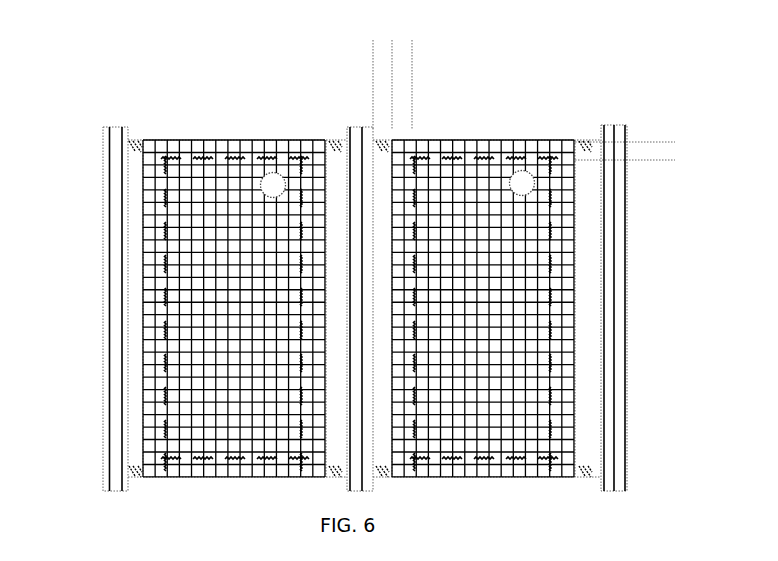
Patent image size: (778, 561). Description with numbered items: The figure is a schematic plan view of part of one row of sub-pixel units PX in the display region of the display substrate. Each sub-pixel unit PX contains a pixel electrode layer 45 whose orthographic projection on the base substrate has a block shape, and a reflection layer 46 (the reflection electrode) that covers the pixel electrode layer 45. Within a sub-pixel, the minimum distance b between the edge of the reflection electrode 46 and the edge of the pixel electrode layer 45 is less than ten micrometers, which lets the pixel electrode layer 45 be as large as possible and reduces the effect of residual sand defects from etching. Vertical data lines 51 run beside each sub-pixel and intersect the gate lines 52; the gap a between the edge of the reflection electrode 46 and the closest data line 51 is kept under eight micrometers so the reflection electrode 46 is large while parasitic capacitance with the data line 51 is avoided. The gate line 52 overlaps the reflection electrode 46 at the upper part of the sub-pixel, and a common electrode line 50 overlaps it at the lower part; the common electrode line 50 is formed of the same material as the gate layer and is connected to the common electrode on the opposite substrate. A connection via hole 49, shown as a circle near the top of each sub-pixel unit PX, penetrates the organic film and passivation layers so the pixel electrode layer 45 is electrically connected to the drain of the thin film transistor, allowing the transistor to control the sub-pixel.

The pixel electrode layer 45 is at (143, 243).
The reflection layer 46 is at (195, 148).
The connection via hole 49 is at (273, 190).
The common electrode line 50 is at (132, 476).
The data line 51 is at (103, 178).
The gate line 52 is at (137, 146).
The sub-pixel unit PX is at (235, 110).
The gap width a is at (392, 76).
The minimum distance b is at (412, 76).